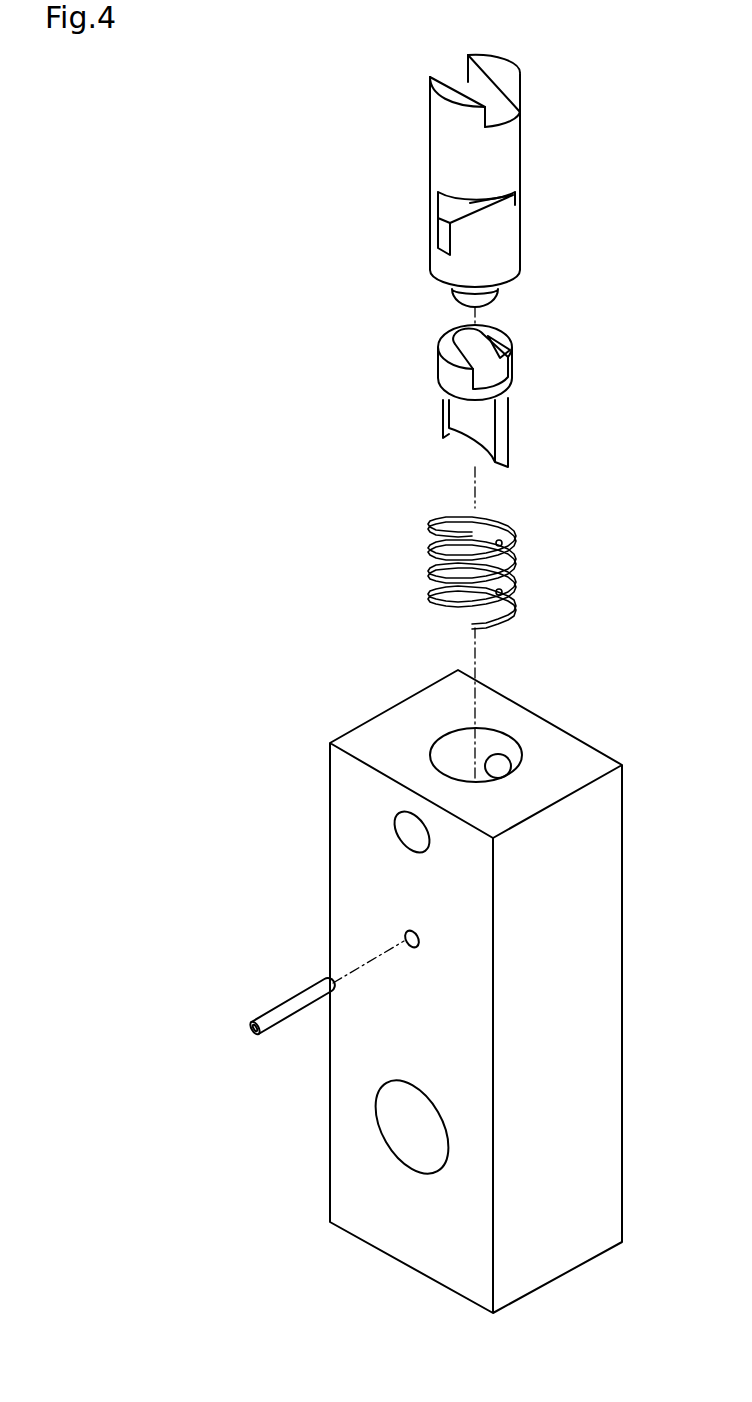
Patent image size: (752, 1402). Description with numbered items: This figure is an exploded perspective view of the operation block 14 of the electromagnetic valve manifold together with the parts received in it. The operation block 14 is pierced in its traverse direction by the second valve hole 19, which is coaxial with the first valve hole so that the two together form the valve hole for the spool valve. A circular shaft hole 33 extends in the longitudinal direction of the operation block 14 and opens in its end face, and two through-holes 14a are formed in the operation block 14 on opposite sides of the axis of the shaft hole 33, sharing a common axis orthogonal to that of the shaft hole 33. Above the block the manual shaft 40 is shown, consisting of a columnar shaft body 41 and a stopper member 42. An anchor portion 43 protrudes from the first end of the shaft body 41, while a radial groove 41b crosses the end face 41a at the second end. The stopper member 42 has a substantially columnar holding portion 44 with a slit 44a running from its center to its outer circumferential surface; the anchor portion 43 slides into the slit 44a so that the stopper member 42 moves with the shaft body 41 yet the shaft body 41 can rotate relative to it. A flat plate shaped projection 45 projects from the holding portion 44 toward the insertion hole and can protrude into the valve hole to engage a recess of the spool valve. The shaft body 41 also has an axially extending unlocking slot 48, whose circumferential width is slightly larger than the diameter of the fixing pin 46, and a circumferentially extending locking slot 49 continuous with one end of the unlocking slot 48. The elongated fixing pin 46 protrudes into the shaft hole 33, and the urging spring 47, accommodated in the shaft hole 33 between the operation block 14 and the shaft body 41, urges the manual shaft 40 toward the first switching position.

The operation block 14 is at (340, 790).
The through-hole 14a is at (500, 762).
The second valve hole 19 is at (408, 1127).
The shaft hole 33 is at (447, 757).
The manual shaft 40 is at (507, 243).
The shaft body 41 is at (440, 148).
The end face 41a is at (503, 70).
The groove 41b is at (463, 83).
The stopper member 42 is at (443, 375).
The anchor portion 43 is at (450, 297).
The holding portion 44 is at (438, 363).
The slit 44a is at (500, 352).
The projection 45 is at (452, 413).
The fixing pin 46 is at (283, 1010).
The urging spring 47 is at (428, 568).
The unlocking slot 48 is at (450, 223).
The locking slot 49 is at (492, 198).